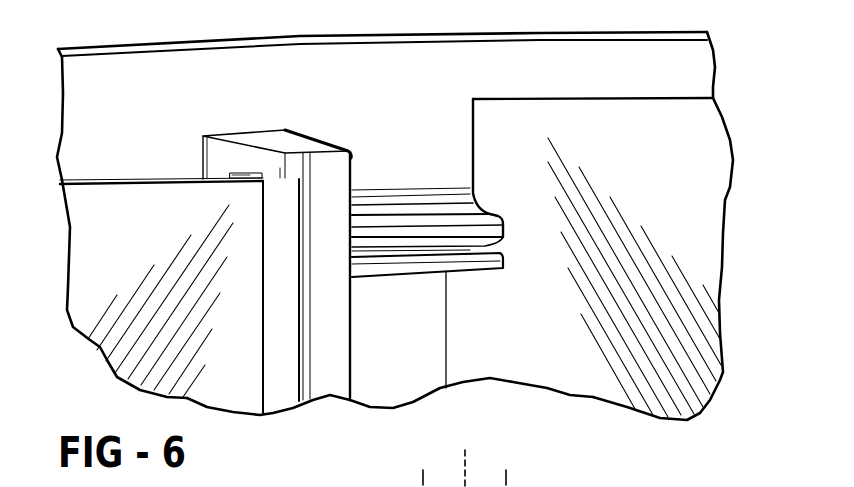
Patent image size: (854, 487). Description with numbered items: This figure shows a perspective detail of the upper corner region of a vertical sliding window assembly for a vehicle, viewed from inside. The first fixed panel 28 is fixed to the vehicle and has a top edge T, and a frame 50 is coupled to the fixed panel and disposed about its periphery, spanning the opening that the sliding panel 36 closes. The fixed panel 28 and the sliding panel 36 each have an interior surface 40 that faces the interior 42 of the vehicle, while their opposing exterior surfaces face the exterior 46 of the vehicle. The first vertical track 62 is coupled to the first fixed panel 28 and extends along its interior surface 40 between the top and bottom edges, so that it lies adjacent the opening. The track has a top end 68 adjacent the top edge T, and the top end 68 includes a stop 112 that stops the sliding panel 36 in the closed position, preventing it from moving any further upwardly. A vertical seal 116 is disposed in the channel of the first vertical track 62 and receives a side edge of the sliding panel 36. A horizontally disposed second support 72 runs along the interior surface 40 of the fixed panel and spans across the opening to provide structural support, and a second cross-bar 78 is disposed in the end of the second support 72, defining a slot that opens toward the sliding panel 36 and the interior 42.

The top edge T is at (156, 25).
The first fixed panel 28 is at (707, 172).
The sliding panel 36 is at (230, 403).
The interior surface 40 is at (142, 232).
The interior 42 is at (426, 467).
The exterior 46 is at (494, 468).
The frame 50 is at (693, 80).
The first vertical track 62 is at (340, 318).
The top end 68 is at (200, 155).
The second support 72 is at (452, 147).
The second cross-bar 78 is at (487, 247).
The stop 112 is at (265, 135).
The vertical seal 116 is at (293, 252).